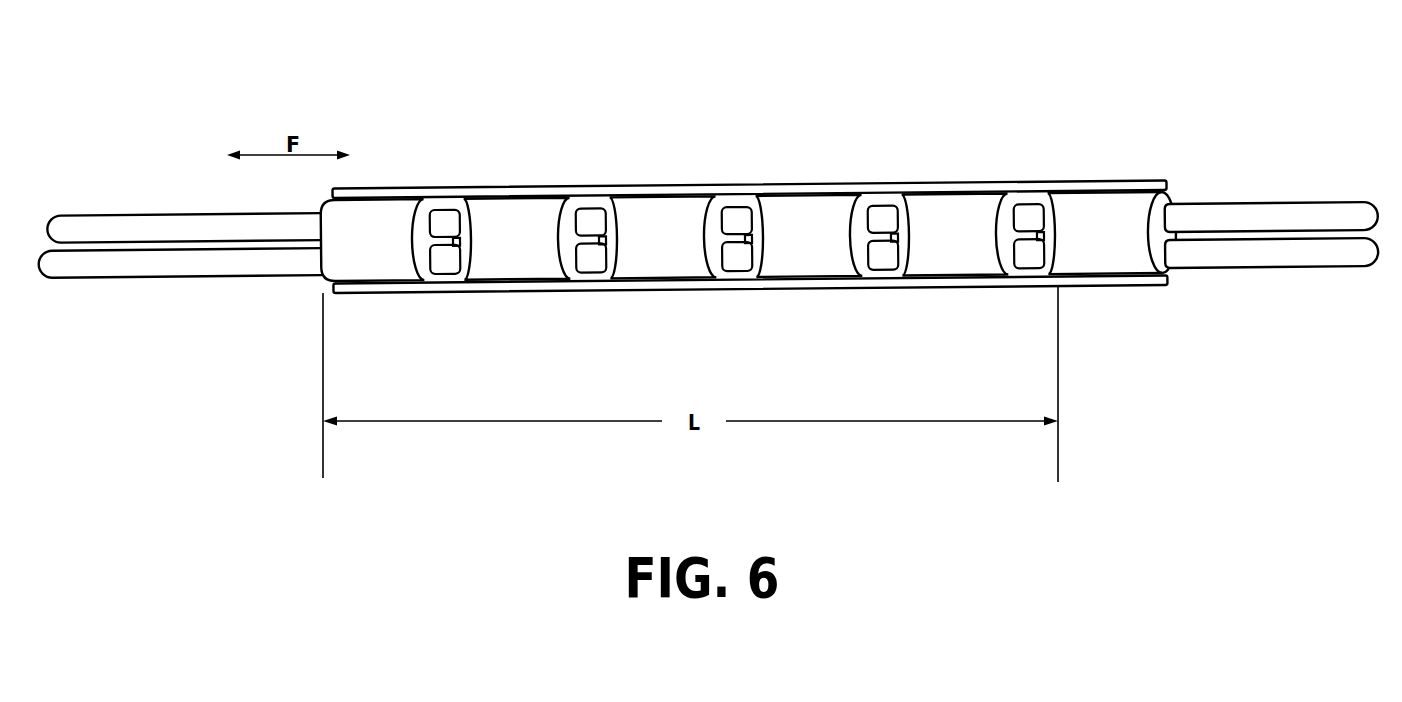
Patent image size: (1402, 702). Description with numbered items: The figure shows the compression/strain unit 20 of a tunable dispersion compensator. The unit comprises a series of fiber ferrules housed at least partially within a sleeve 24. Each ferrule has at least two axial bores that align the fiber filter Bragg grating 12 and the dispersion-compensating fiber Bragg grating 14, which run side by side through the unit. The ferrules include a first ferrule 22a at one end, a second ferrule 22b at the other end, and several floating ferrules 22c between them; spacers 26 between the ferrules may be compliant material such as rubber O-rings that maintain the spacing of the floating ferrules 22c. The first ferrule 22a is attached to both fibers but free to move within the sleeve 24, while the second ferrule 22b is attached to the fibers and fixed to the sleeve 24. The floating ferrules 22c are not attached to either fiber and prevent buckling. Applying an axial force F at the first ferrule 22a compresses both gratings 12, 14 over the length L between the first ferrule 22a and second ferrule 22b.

The fiber filter Bragg grating 12 is at (108, 267).
The dispersion-compensating fiber Bragg grating 14 is at (127, 223).
The compression/strain unit 20 is at (255, 390).
The first ferrule 22a is at (368, 232).
The second ferrule 22b is at (1096, 230).
The floating ferrule 22c is at (508, 232).
The sleeve 24 is at (816, 285).
The coupling clip 26 is at (453, 225).